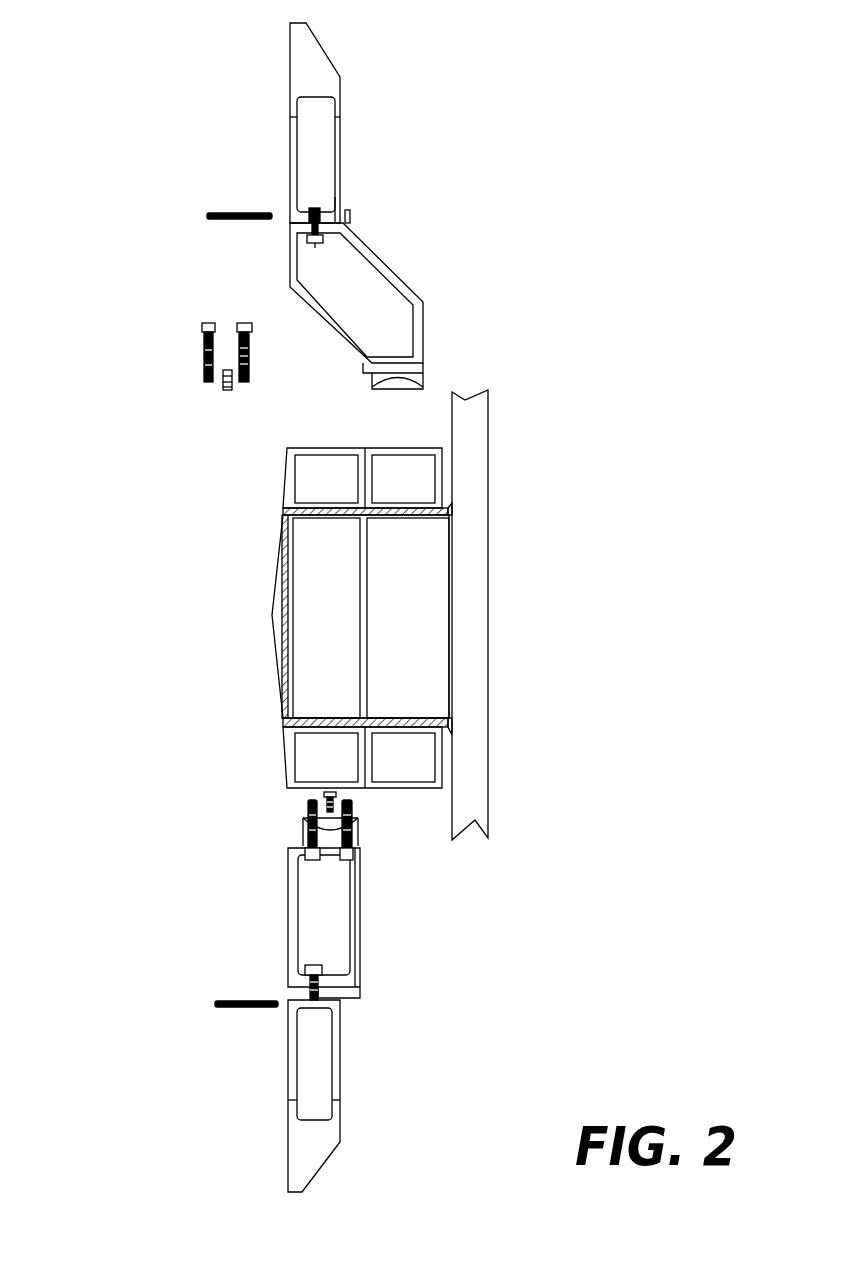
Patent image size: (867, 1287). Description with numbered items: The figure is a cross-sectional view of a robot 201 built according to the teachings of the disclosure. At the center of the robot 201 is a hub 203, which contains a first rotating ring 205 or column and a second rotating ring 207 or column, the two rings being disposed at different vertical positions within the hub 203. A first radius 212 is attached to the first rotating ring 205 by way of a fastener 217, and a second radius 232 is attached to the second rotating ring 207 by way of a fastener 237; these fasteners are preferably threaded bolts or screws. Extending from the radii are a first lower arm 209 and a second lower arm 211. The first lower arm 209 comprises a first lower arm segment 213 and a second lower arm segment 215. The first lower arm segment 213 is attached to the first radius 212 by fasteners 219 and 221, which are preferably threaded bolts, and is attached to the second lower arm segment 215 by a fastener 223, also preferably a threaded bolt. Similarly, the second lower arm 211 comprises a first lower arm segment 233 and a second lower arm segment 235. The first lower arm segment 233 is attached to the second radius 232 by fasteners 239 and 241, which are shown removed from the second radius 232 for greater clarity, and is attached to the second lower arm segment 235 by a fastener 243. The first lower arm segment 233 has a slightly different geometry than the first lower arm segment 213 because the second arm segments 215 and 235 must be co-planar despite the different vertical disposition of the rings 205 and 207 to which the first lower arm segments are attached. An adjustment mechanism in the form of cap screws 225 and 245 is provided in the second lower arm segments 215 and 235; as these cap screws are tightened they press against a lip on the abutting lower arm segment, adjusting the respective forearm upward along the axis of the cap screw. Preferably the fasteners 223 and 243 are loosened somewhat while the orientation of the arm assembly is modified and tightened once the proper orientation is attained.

The robot 201 is at (127, 58).
The hub 203 is at (272, 618).
The first rotating ring 205 is at (292, 478).
The second rotating ring 207 is at (402, 788).
The first lower arm 209 is at (438, 1033).
The second lower arm 211 is at (445, 182).
The first radius 212 is at (305, 820).
The first lower arm segment 213 is at (360, 930).
The second lower arm segment 215 is at (340, 1068).
The fastener 217 is at (325, 797).
The fastener 219 is at (312, 860).
The fastener 221 is at (348, 862).
The fastener 223 is at (312, 965).
The cap screw 225 is at (233, 1005).
The second radius 232 is at (398, 392).
The first lower arm segment 233 is at (423, 330).
The second lower arm segment 235 is at (342, 145).
The fastener 237 is at (225, 385).
The fastener 239 is at (203, 325).
The fastener 241 is at (250, 372).
The fastener 243 is at (316, 245).
The cap screw 245 is at (225, 213).